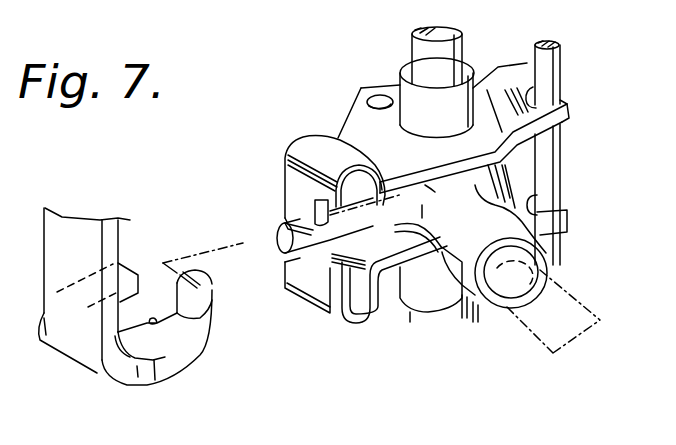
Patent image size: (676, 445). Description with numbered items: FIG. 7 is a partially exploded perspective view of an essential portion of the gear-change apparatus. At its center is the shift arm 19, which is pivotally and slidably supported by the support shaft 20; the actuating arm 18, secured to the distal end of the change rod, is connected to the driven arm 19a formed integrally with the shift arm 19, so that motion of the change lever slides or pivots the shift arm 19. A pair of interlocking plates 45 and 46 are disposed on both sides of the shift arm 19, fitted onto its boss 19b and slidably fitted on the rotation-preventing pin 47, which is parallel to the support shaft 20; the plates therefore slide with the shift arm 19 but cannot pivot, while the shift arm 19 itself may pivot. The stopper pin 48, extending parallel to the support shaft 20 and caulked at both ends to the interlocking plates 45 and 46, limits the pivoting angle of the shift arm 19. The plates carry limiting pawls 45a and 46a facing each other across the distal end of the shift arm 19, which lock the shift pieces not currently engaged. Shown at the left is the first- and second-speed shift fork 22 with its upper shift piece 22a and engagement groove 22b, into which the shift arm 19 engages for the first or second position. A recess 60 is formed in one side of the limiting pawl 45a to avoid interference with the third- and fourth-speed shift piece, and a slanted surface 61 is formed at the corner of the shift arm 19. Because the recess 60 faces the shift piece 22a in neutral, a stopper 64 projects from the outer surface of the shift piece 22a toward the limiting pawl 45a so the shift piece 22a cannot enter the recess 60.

The actuating arm 18 is at (568, 285).
The shift arm 19 is at (279, 240).
The driven arm 19a is at (465, 307).
The boss 19b is at (402, 80).
The support shaft 20 is at (447, 55).
The first- and second-speed shift fork 22 is at (60, 220).
The upper shift piece 22a is at (178, 363).
The engagement groove 22b is at (177, 313).
The interlocking plate 45 is at (356, 126).
The limiting pawl 45a is at (290, 167).
The interlocking plate 46 is at (420, 253).
The limiting pawl 46a is at (325, 302).
The rotation-preventing pin 47 is at (552, 75).
The stopper pin 48 is at (372, 96).
The recess 60 is at (315, 205).
The slanted surface 61 is at (327, 283).
The stopper 64 is at (197, 275).